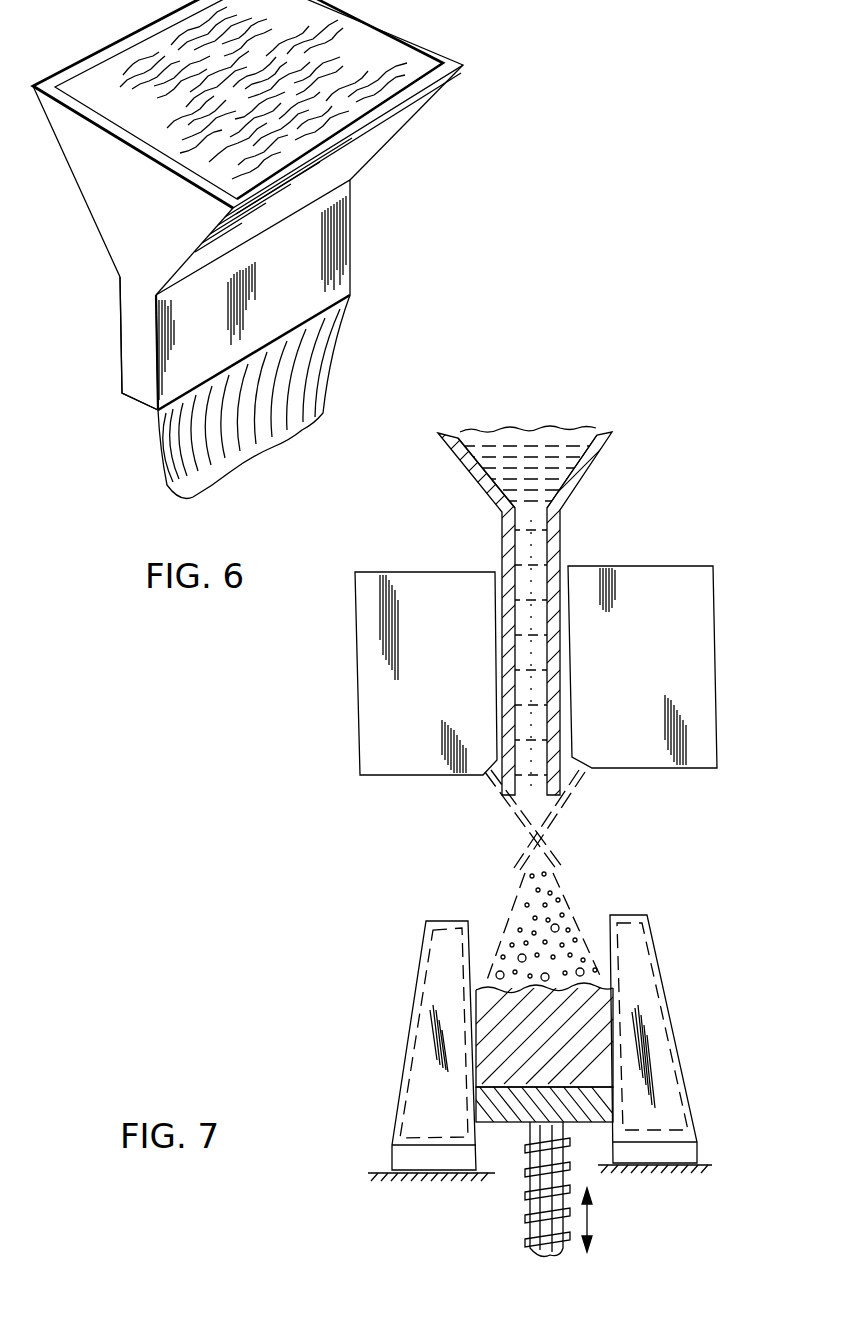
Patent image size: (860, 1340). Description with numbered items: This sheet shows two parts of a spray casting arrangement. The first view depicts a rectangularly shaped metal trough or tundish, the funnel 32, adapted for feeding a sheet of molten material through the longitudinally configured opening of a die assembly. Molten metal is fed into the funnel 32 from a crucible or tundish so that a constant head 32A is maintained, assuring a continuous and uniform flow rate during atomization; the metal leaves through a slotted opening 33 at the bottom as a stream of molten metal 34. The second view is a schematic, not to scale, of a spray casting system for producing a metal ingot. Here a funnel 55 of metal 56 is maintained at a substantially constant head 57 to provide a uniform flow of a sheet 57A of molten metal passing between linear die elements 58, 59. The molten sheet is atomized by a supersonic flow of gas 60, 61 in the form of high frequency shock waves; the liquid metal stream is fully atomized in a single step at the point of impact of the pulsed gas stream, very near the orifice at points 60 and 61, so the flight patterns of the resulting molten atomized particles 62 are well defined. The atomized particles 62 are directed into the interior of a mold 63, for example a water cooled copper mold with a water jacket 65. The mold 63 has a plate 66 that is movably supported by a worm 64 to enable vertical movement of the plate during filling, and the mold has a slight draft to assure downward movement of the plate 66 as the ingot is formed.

In FIG. 6, the funnel 32 is at (403, 128).
In FIG. 6, the constant head 32A is at (347, 58).
In FIG. 6, the slotted opening 33 is at (135, 407).
In FIG. 6, the stream of molten metal 34 is at (173, 467).
In FIG. 7, the funnel 55 is at (472, 480).
In FIG. 7, the metal 56 is at (513, 483).
In FIG. 7, the constant head 57 is at (527, 433).
In FIG. 7, the sheet of molten metal 57A is at (540, 650).
In FIG. 7, the linear die element 58 is at (357, 675).
In FIG. 7, the linear die element 59 is at (717, 663).
In FIG. 7, the supersonic flow of gas 60 is at (507, 815).
In FIG. 7, the supersonic flow of gas 61 is at (567, 822).
In FIG. 7, the atomized particles 62 is at (520, 893).
In FIG. 7, the mold 63 is at (410, 1025).
In FIG. 7, the worm 64 is at (537, 1212).
In FIG. 7, the water jacket 65 is at (428, 962).
In FIG. 7, the plate 66 is at (517, 1122).